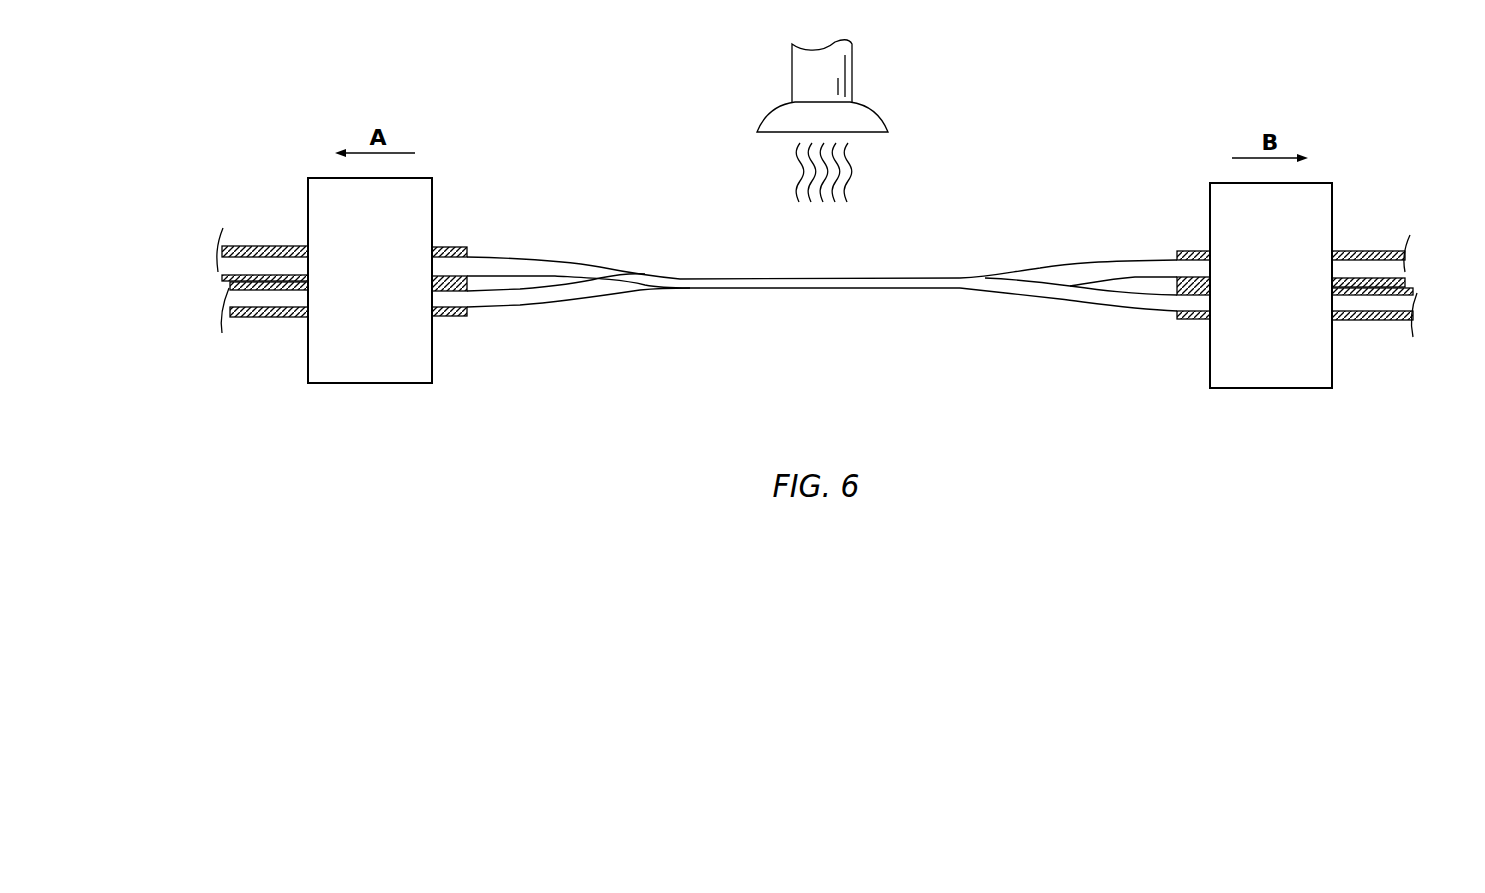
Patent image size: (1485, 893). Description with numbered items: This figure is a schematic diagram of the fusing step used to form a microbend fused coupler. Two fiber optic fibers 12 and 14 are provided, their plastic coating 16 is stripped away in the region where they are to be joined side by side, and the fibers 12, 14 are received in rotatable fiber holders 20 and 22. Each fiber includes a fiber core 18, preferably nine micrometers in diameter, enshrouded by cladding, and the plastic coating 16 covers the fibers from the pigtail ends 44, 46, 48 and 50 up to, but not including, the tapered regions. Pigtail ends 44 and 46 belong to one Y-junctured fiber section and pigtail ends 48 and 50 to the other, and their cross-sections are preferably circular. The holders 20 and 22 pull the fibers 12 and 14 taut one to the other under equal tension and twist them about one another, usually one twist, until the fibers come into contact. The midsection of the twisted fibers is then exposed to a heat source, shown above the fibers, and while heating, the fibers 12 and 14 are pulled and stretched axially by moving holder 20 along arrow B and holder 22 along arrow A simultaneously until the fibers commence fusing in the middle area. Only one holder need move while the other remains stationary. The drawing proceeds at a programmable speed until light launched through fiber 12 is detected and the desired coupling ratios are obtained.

The fiber optic fiber 12 is at (271, 234).
The fiber optic fiber 14 is at (272, 327).
The plastic coating 16 is at (247, 245).
The fiber core 18 is at (1366, 304).
The rotatable fiber holder 20 is at (1258, 233).
The rotatable fiber holder 22 is at (358, 229).
The pigtail end 44 is at (218, 266).
The pigtail end 46 is at (228, 300).
The pigtail end 48 is at (1408, 267).
The pigtail end 50 is at (1417, 303).